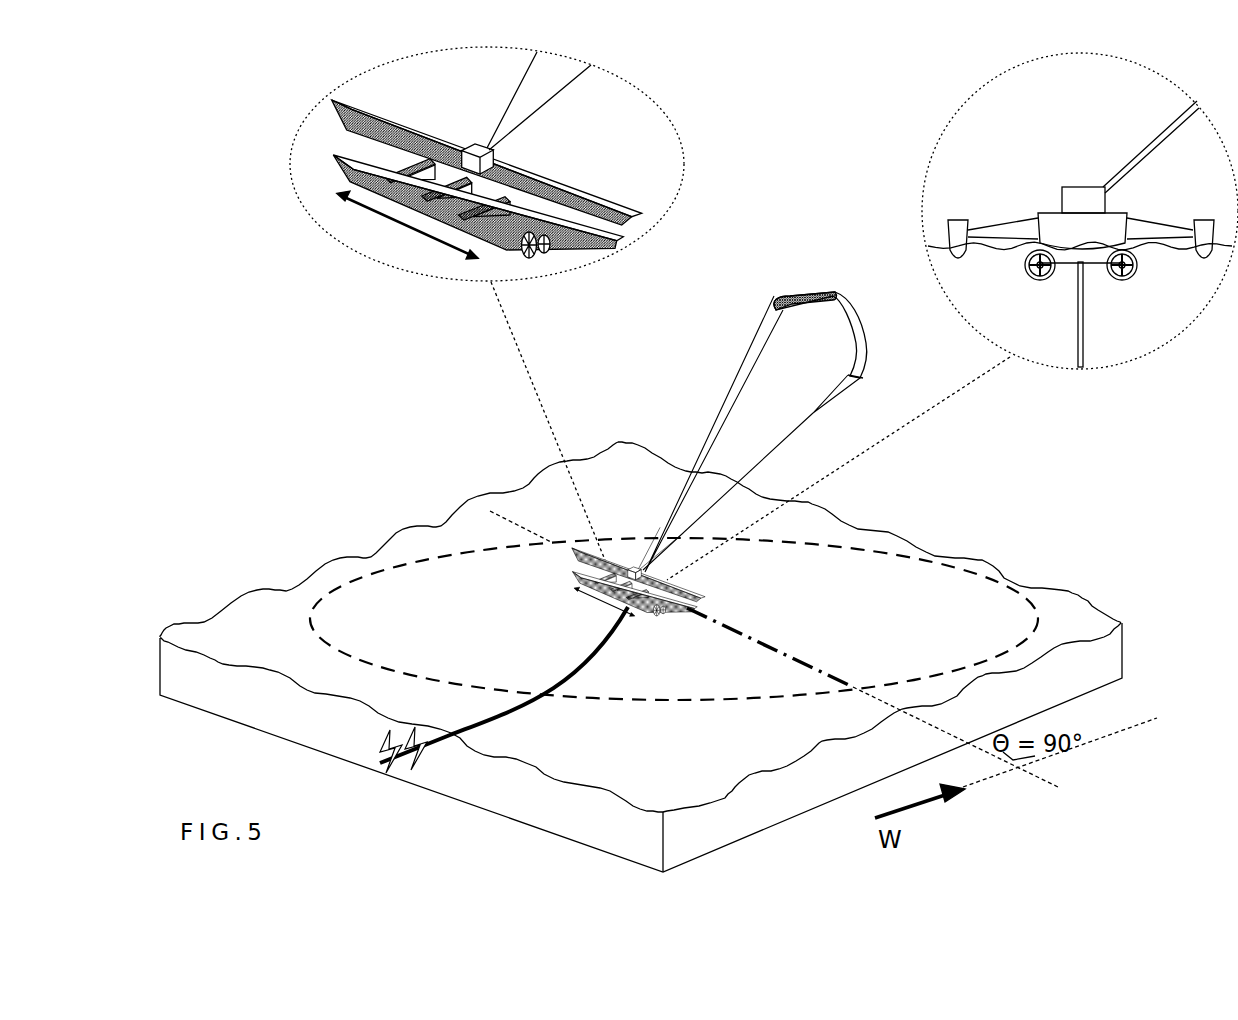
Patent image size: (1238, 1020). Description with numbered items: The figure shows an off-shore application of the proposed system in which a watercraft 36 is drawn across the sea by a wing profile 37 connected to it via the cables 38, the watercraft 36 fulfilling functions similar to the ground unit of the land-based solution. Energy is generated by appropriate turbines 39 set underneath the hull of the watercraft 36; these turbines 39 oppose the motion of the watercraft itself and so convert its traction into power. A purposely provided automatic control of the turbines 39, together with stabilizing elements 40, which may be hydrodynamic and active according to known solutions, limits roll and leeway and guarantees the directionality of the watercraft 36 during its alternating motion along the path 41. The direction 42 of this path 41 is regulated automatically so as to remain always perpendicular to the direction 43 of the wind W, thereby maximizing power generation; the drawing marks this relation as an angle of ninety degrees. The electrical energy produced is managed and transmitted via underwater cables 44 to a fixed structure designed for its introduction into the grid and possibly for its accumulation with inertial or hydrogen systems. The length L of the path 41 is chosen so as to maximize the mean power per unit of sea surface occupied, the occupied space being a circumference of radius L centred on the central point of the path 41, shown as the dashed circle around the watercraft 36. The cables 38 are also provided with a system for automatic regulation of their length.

The watercraft 36 is at (487, 155).
The wing profile 37 is at (820, 318).
The cables 38 is at (751, 434).
The turbines 39 is at (1120, 267).
The stabilizing elements 40 is at (1082, 276).
The path 41 is at (674, 619).
The direction 42 is at (780, 668).
The direction of the wind 43 is at (1060, 752).
The underwater cables 44 is at (504, 690).